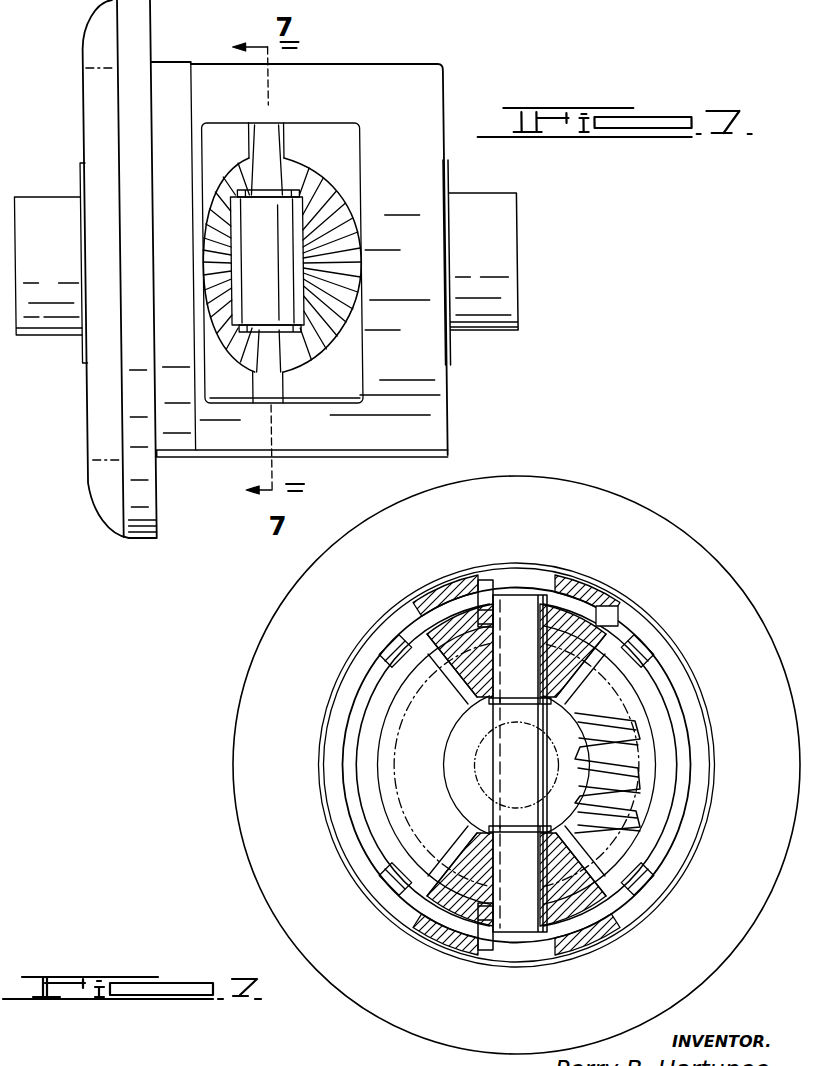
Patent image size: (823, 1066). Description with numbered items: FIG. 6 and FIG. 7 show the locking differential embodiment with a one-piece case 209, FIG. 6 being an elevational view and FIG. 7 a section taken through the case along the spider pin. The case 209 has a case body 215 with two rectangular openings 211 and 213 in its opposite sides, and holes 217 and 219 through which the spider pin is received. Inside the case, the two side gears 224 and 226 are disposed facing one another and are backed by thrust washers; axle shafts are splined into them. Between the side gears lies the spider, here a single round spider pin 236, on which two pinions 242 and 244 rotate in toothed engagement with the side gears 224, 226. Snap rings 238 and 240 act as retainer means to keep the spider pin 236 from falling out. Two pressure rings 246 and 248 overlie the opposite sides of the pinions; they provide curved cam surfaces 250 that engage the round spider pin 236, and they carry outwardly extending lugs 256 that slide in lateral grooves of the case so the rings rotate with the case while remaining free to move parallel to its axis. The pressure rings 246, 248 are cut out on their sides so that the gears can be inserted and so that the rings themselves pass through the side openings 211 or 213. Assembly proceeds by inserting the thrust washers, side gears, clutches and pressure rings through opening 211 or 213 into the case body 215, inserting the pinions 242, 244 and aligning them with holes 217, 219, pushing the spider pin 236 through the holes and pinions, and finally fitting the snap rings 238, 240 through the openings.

In FIG. 6, the case 209 is at (438, 62).
In FIG. 7, the case 209 is at (516, 765).
In FIG. 6, the rectangular opening 211 is at (316, 130).
In FIG. 7, the rectangular opening 211 is at (410, 907).
In FIG. 7, the rectangular opening 213 is at (615, 904).
In FIG. 7, the case body 215 is at (589, 927).
In FIG. 7, the hole 217 is at (494, 582).
In FIG. 7, the hole 219 is at (493, 943).
In FIG. 6, the side gear 224 is at (205, 257).
In FIG. 7, the side gear 224 is at (627, 713).
In FIG. 6, the side gear 226 is at (332, 294).
In FIG. 6, the spider pin 236 is at (272, 258).
In FIG. 7, the spider pin 236 is at (505, 608).
In FIG. 6, the snap ring 238 is at (298, 211).
In FIG. 6, the snap ring 240 is at (301, 328).
In FIG. 6, the pinion 242 is at (262, 141).
In FIG. 7, the pinion 242 is at (562, 643).
In FIG. 6, the pinion 244 is at (272, 392).
In FIG. 7, the pinion 244 is at (559, 798).
In FIG. 6, the pressure ring 246 is at (223, 388).
In FIG. 7, the pressure ring 246 is at (607, 641).
In FIG. 6, the pressure ring 248 is at (330, 154).
In FIG. 7, the pressure ring 248 is at (643, 862).
In FIG. 7, the thrust block 250 is at (485, 610).
In FIG. 7, the retaining tab 256 is at (633, 643).